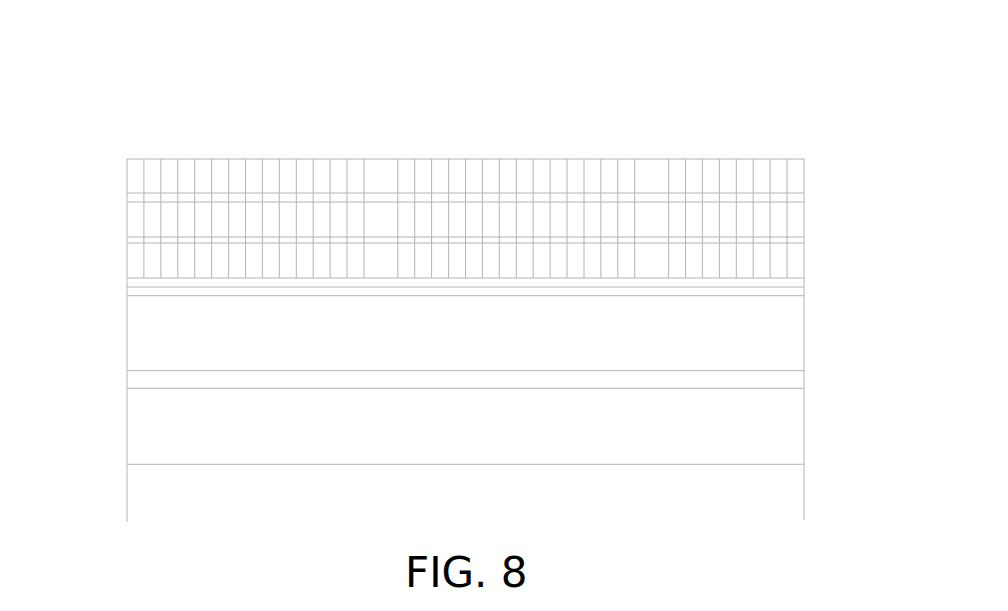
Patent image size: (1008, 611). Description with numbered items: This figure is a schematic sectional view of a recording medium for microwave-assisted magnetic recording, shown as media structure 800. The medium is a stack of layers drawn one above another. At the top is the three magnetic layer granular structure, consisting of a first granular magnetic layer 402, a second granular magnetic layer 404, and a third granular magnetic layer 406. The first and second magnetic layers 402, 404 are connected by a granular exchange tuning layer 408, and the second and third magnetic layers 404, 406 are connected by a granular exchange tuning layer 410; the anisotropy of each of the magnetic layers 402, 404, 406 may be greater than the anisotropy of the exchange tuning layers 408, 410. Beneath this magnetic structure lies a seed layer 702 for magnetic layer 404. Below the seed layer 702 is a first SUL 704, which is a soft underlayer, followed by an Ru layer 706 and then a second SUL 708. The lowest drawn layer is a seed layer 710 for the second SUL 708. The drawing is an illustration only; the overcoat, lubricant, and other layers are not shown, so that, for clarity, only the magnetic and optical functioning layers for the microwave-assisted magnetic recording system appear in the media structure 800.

The media structure 800 is at (188, 103).
The first granular magnetic layer 402 is at (804, 178).
The second granular magnetic layer 404 is at (804, 220).
The third granular magnetic layer 406 is at (804, 262).
The granular exchange tuning layer 408 is at (127, 197).
The granular exchange tuning layer 410 is at (127, 240).
The seed layer 702 is at (127, 287).
The first SUL 704 is at (804, 333).
The Ru layer 706 is at (127, 380).
The second SUL 708 is at (804, 427).
The seed layer 710 is at (804, 493).